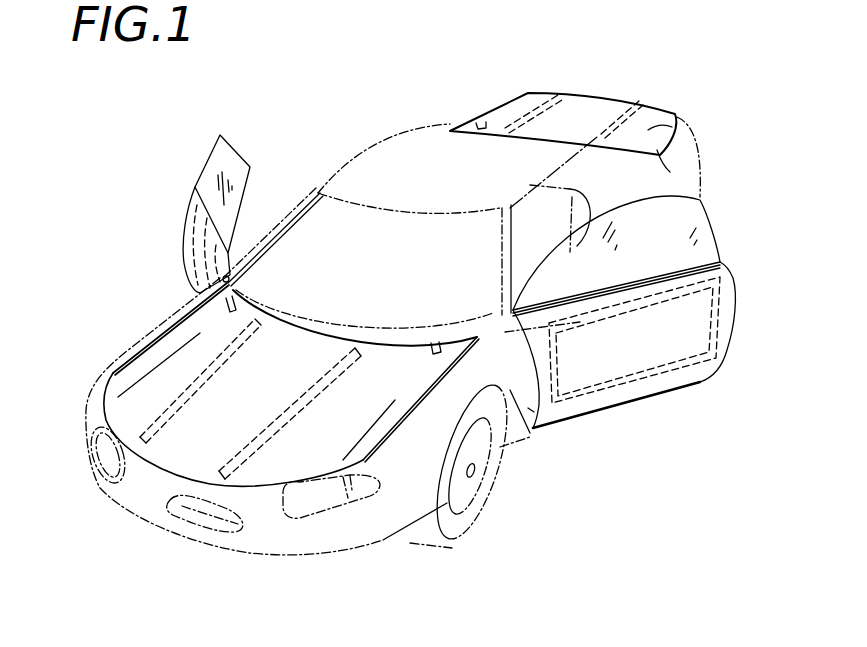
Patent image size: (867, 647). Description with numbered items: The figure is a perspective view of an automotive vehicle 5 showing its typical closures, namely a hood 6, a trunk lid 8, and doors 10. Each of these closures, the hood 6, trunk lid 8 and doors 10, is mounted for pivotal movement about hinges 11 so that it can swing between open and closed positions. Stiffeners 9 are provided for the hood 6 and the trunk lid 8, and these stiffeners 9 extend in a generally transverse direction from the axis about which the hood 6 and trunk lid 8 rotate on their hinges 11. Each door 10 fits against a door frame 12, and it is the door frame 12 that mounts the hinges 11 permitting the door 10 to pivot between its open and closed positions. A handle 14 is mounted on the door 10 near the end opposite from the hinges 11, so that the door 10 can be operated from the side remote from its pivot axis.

The automotive vehicle 5 is at (333, 146).
The hood 6 is at (190, 452).
The trunk lid 8 is at (593, 110).
The stiffeners 9 is at (555, 97).
The doors 10 is at (188, 199).
The hinges 11 is at (486, 122).
The door frame 12 is at (475, 472).
The handle 14 is at (728, 295).